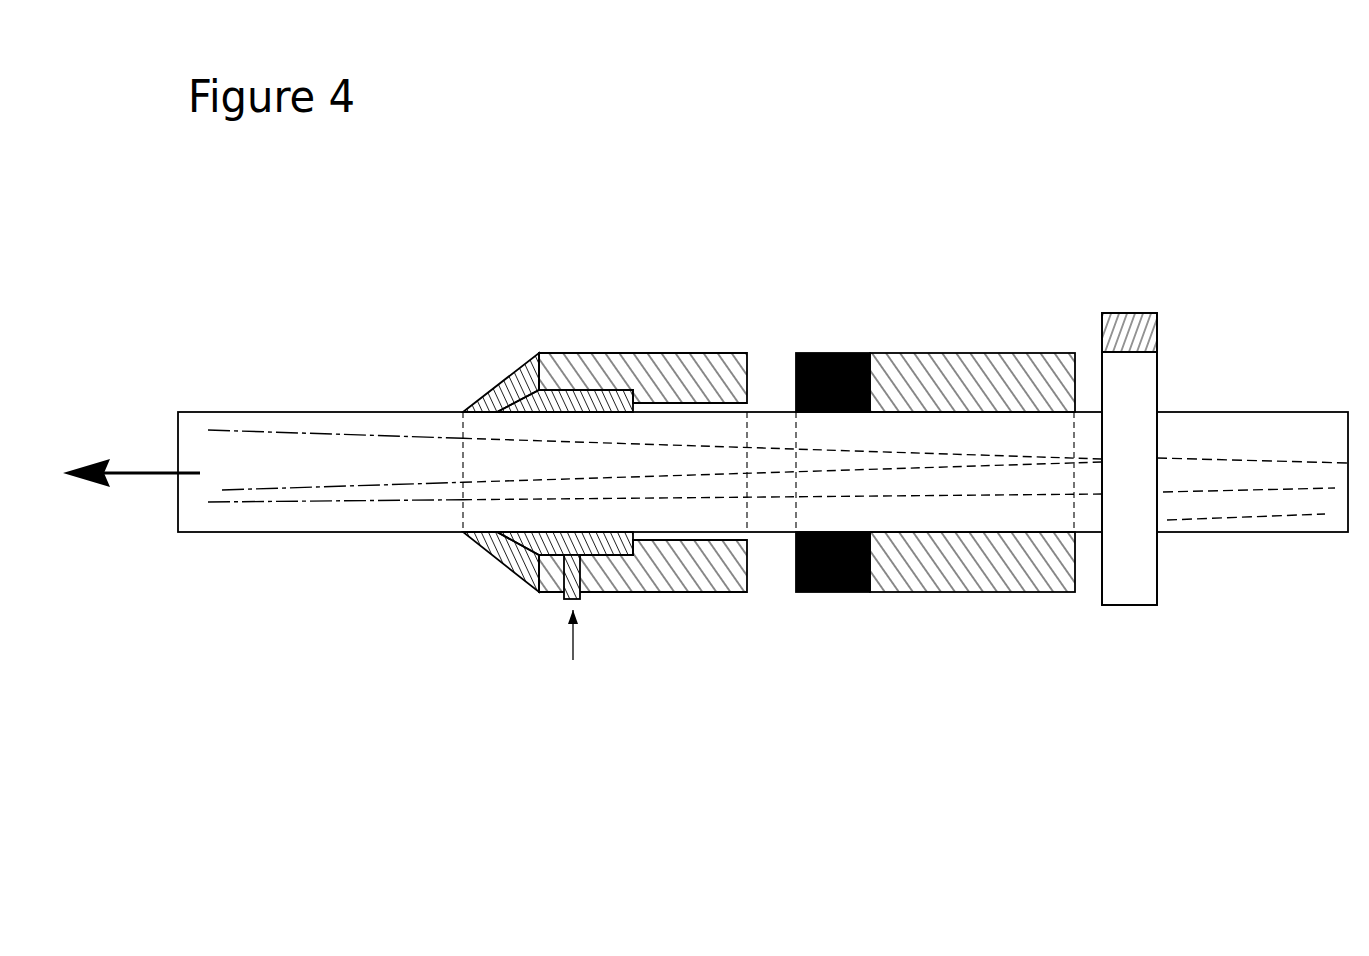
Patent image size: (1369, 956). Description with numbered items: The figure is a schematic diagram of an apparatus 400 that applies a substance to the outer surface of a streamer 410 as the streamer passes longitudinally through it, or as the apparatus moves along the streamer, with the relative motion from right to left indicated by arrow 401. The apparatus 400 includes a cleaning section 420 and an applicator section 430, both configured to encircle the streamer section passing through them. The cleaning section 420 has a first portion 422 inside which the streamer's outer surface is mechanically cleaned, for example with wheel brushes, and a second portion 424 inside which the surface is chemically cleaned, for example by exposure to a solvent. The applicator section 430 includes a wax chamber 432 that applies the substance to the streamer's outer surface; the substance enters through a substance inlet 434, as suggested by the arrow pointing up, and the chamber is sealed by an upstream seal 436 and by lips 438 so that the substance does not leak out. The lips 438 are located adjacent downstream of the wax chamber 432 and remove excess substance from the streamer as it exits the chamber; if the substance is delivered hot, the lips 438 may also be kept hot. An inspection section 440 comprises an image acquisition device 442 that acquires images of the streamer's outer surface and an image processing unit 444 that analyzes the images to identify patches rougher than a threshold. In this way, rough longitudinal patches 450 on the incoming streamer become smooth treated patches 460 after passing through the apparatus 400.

The apparatus 400 is at (778, 244).
The arrow 401 is at (137, 470).
The streamer 410 is at (250, 412).
The cleaning section 420 is at (945, 353).
The first portion 422 is at (1000, 572).
The second portion 424 is at (822, 595).
The applicator section 430 is at (637, 353).
The wax chamber 432 is at (576, 398).
The substance inlet 434 is at (565, 573).
The upstream seal 436 is at (688, 396).
The lips 438 is at (512, 560).
The inspection section 440 is at (1157, 388).
The image acquisition device 442 is at (1140, 572).
The image processing unit 444 is at (1112, 325).
The longitudinal patches 450 is at (1218, 520).
The treated patches 460 is at (340, 436).